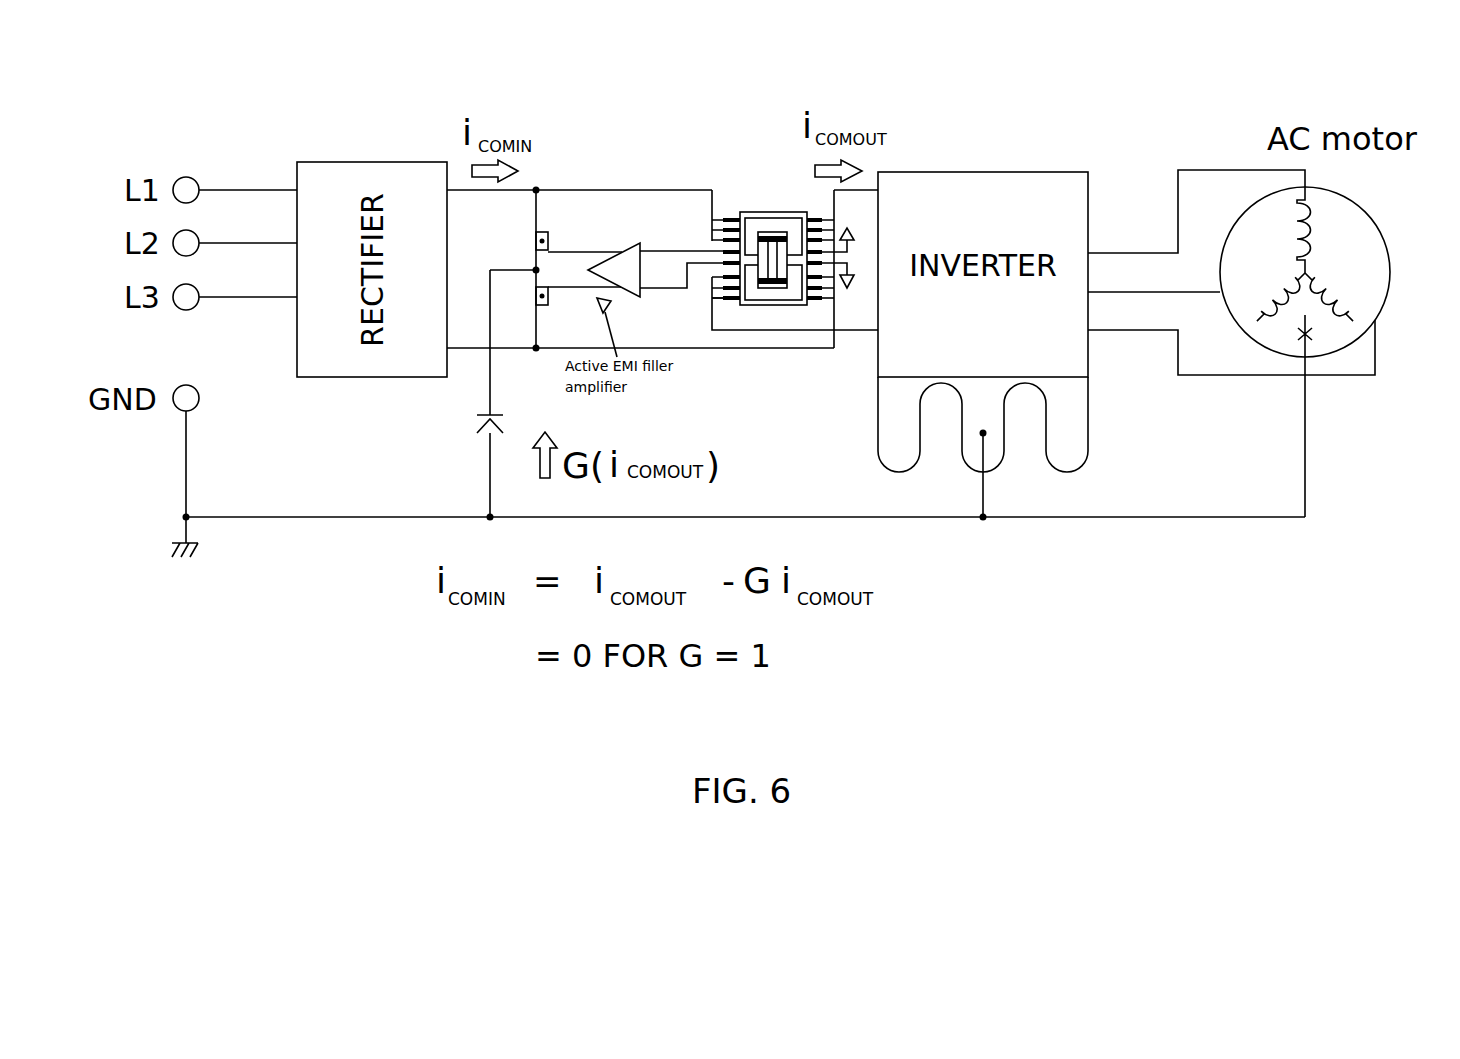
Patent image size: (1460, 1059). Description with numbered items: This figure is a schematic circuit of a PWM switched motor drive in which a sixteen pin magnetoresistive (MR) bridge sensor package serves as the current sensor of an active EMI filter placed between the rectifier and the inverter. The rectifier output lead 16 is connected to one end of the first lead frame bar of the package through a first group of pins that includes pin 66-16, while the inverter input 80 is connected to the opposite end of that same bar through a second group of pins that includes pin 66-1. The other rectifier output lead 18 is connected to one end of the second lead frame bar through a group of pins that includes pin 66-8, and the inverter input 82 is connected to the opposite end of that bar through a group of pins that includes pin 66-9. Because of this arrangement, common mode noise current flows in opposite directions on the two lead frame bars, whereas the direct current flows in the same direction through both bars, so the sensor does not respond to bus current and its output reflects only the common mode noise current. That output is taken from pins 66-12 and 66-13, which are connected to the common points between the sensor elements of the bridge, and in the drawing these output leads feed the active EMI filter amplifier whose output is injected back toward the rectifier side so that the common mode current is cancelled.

The rectifier output lead 16 is at (584, 190).
The rectifier output lead 18 is at (558, 350).
The inverter input 80 is at (858, 192).
The inverter input 82 is at (807, 331).
The pin 66-1 is at (820, 218).
The pin 66-8 is at (822, 300).
The pin 66-9 is at (732, 303).
The pin 66-12 is at (669, 288).
The pin 66-13 is at (700, 252).
The pin 66-16 is at (728, 216).